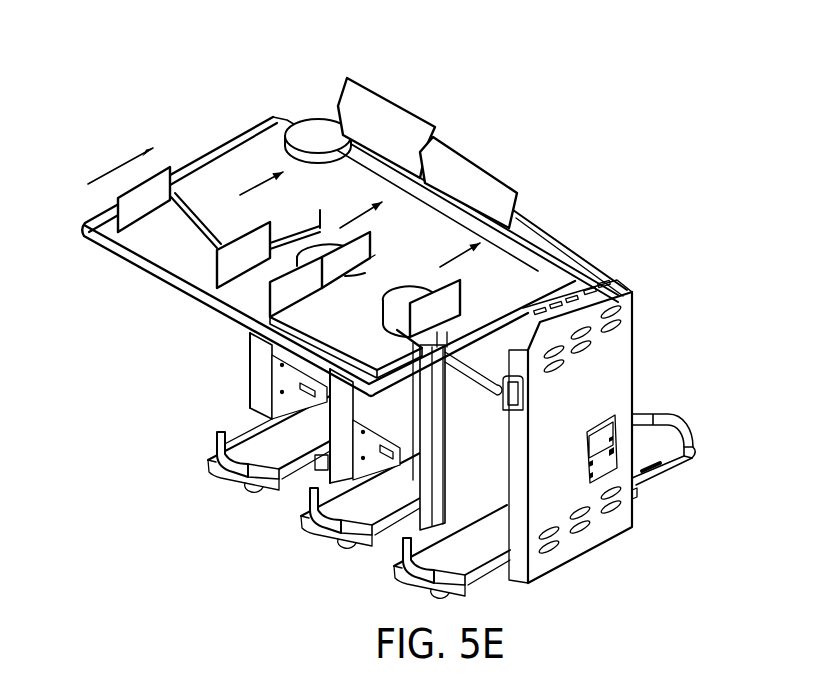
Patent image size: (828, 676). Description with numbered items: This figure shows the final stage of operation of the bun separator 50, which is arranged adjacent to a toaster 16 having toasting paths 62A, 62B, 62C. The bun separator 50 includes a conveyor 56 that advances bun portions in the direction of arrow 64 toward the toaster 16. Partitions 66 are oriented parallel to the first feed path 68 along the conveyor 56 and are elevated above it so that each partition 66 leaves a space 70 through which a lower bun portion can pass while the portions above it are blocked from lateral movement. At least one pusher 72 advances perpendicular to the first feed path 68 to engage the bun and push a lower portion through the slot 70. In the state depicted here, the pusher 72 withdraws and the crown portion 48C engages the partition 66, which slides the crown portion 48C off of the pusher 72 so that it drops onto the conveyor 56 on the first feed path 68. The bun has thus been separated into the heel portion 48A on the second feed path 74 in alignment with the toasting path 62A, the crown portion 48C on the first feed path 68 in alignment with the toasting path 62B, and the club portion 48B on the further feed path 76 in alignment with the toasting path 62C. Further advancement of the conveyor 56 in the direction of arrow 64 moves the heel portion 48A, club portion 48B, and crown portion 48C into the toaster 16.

The toaster 16 is at (628, 281).
The bun separator 50 is at (258, 108).
The conveyor 56 is at (203, 152).
The toasting path 62A is at (372, 132).
The toasting path 62B is at (458, 198).
The toasting path 62C is at (533, 258).
The arrow 64 is at (117, 167).
The partition 66 is at (221, 253).
The first feed path 68 is at (356, 218).
The space 70 is at (233, 280).
The pusher 72 is at (221, 201).
The second feed path 74 is at (255, 183).
The feed path 76 is at (458, 258).
The heel portion 48A is at (312, 130).
The club portion 48B is at (412, 300).
The crown portion 48C is at (285, 290).